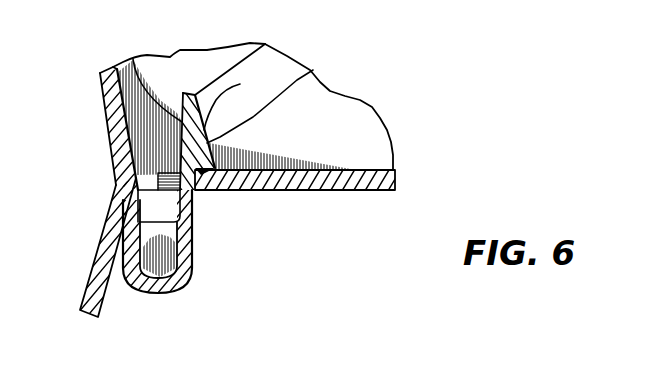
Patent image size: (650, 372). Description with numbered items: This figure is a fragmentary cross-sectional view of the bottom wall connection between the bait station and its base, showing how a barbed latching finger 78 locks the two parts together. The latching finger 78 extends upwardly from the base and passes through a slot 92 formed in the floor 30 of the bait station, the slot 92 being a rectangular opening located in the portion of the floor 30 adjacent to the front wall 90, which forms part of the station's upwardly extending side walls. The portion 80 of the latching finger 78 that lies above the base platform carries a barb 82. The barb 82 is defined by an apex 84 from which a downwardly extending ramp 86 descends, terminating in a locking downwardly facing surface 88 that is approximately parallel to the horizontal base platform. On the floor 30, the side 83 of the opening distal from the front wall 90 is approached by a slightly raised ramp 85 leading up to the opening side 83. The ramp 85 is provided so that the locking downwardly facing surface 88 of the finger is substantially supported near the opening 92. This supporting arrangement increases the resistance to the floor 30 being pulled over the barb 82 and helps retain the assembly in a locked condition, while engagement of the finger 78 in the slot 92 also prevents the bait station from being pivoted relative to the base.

The floor 30 is at (323, 192).
The barbed latching finger 78 is at (181, 92).
The portion of latching finger above platform 80 is at (133, 59).
The barb 82 is at (240, 84).
The side of opening 83 is at (227, 192).
The apex 84 is at (267, 45).
The ramp 85 is at (217, 170).
The downwardly extending ramp 86 is at (313, 70).
The locking downwardly facing surface 88 is at (205, 193).
The front wall 90 is at (100, 100).
The slot 92 is at (163, 173).